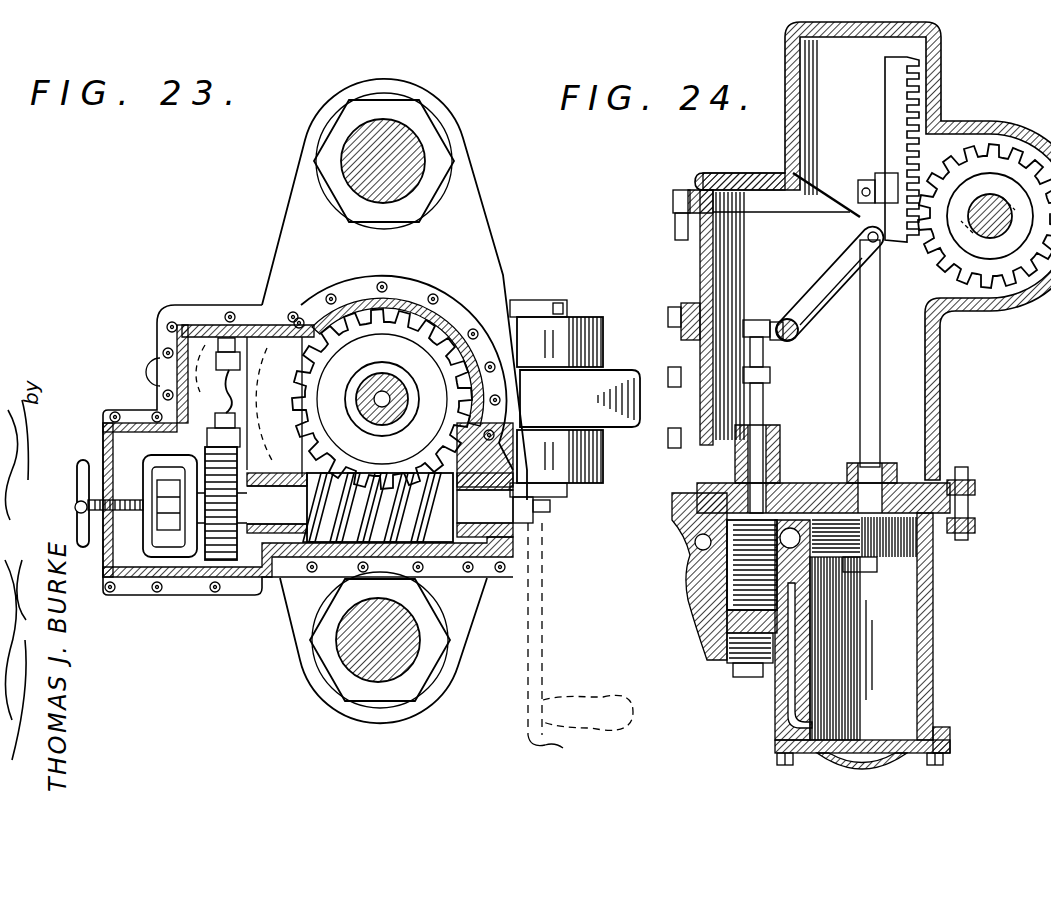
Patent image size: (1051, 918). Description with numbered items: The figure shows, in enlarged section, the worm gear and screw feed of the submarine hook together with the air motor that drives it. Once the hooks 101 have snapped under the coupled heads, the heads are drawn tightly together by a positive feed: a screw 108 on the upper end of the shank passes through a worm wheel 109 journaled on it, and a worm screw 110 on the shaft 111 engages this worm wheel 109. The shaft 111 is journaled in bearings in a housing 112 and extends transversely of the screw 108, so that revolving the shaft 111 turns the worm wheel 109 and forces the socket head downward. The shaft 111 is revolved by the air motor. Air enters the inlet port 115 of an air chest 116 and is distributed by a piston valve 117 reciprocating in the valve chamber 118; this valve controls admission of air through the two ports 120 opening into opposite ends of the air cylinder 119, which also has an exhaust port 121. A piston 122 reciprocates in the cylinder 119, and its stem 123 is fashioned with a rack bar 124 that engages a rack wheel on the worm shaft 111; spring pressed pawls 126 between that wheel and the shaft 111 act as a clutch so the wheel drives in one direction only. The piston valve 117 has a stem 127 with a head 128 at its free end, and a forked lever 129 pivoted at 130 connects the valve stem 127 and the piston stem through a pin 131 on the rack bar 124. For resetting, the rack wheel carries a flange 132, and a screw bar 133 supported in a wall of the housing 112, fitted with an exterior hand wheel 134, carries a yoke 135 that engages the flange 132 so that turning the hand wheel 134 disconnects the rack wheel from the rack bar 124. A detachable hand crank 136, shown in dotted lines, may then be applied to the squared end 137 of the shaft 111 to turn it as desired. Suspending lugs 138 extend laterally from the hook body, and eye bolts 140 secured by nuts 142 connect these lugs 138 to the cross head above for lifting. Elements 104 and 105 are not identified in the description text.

In FIG. 23, the hooks 101 is at (640, 360).
In FIG. 23, the bearing flange 104 is at (545, 302).
In FIG. 23, the bearing 105 is at (600, 324).
In FIG. 23, the screw 108 is at (384, 392).
In FIG. 23, the worm wheel 109 is at (367, 343).
In FIG. 23, the worm screw 110 is at (313, 548).
In FIG. 23, the shaft 111 is at (485, 506).
In FIG. 24, the shaft 111 is at (990, 200).
In FIG. 23, the housing 112 is at (200, 330).
In FIG. 24, the housing 112 is at (873, 251).
In FIG. 24, the inlet port 115 is at (697, 543).
In FIG. 24, the air chest 116 is at (747, 573).
In FIG. 24, the piston valve 117 is at (747, 597).
In FIG. 24, the valve chamber 118 is at (750, 626).
In FIG. 24, the air cylinder 119 is at (855, 648).
In FIG. 24, the ports 120 is at (797, 497).
In FIG. 23, the exhaust port 121 is at (160, 380).
In FIG. 24, the exhaust port 121 is at (813, 545).
In FIG. 24, the piston 122 is at (920, 560).
In FIG. 24, the stem 123 is at (880, 428).
In FIG. 23, the rack bar 124 is at (183, 465).
In FIG. 24, the rack bar 124 is at (930, 70).
In FIG. 24, the spring pressed pawls 126 is at (952, 273).
In FIG. 24, the valve stem 127 is at (763, 410).
In FIG. 23, the head 128 is at (217, 345).
In FIG. 24, the head 128 is at (757, 320).
In FIG. 23, the forked lever 129 is at (222, 360).
In FIG. 24, the forked lever 129 is at (825, 288).
In FIG. 24, the pivot 130 is at (808, 340).
In FIG. 24, the pin 131 is at (852, 213).
In FIG. 23, the flange 132 is at (185, 553).
In FIG. 23, the screw bar 133 is at (130, 585).
In FIG. 23, the hand wheel 134 is at (85, 460).
In FIG. 23, the yoke 135 is at (172, 555).
In FIG. 23, the hand crank 136 is at (580, 651).
In FIG. 23, the squared end 137 is at (537, 508).
In FIG. 23, the suspending lugs 138 is at (298, 215).
In FIG. 23, the eye bolts 140 is at (430, 160).
In FIG. 23, the nuts 142 is at (440, 167).